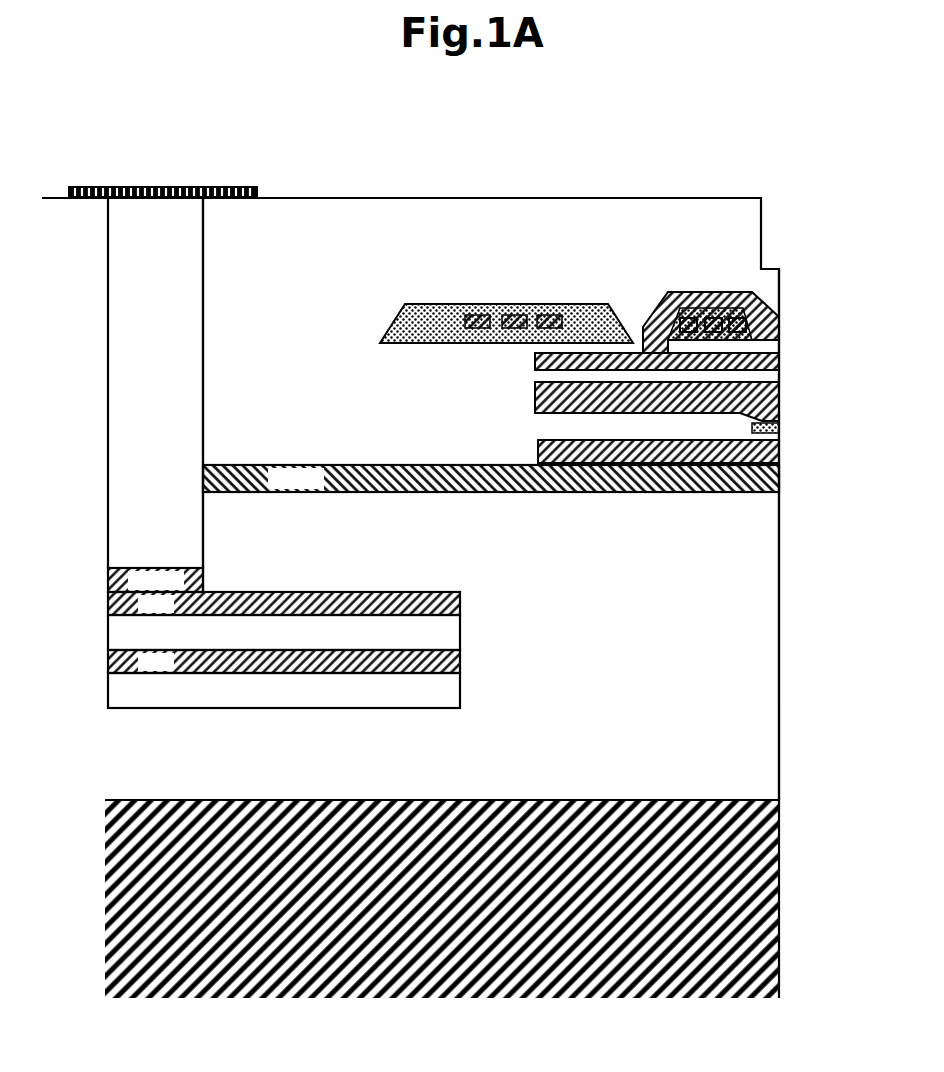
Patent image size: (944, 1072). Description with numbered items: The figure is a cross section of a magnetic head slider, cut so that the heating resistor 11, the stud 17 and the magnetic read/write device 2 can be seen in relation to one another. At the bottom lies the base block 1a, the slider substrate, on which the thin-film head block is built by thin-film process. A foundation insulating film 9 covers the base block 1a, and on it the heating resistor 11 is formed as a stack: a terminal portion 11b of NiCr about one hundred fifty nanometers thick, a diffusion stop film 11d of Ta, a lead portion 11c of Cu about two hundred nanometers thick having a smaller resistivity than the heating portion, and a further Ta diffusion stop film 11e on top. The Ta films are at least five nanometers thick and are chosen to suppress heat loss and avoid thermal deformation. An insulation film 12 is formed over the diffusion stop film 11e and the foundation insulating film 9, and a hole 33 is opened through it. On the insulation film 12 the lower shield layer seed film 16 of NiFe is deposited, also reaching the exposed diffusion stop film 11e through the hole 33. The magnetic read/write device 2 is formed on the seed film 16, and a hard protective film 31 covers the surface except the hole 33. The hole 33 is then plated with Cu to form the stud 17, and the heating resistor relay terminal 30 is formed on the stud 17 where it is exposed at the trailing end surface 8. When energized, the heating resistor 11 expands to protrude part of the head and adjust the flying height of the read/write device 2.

The trailing end surface 8 is at (500, 197).
The hard protective film 31 is at (353, 219).
The heating resistor relay terminal 30 is at (163, 186).
The stud 17 is at (190, 294).
The hole 33 is at (204, 538).
The lower shield layer seed film 16 is at (372, 464).
The magnetic read/write device 2 is at (790, 292).
The heating resistor 11 is at (320, 630).
The diffusion stop film 11e is at (461, 602).
The lead portion 11c is at (450, 631).
The diffusion stop film 11d is at (461, 660).
The terminal portion 11b is at (450, 691).
The insulation film 12 is at (763, 545).
The foundation insulating film 9 is at (763, 768).
The base block 1a is at (763, 915).